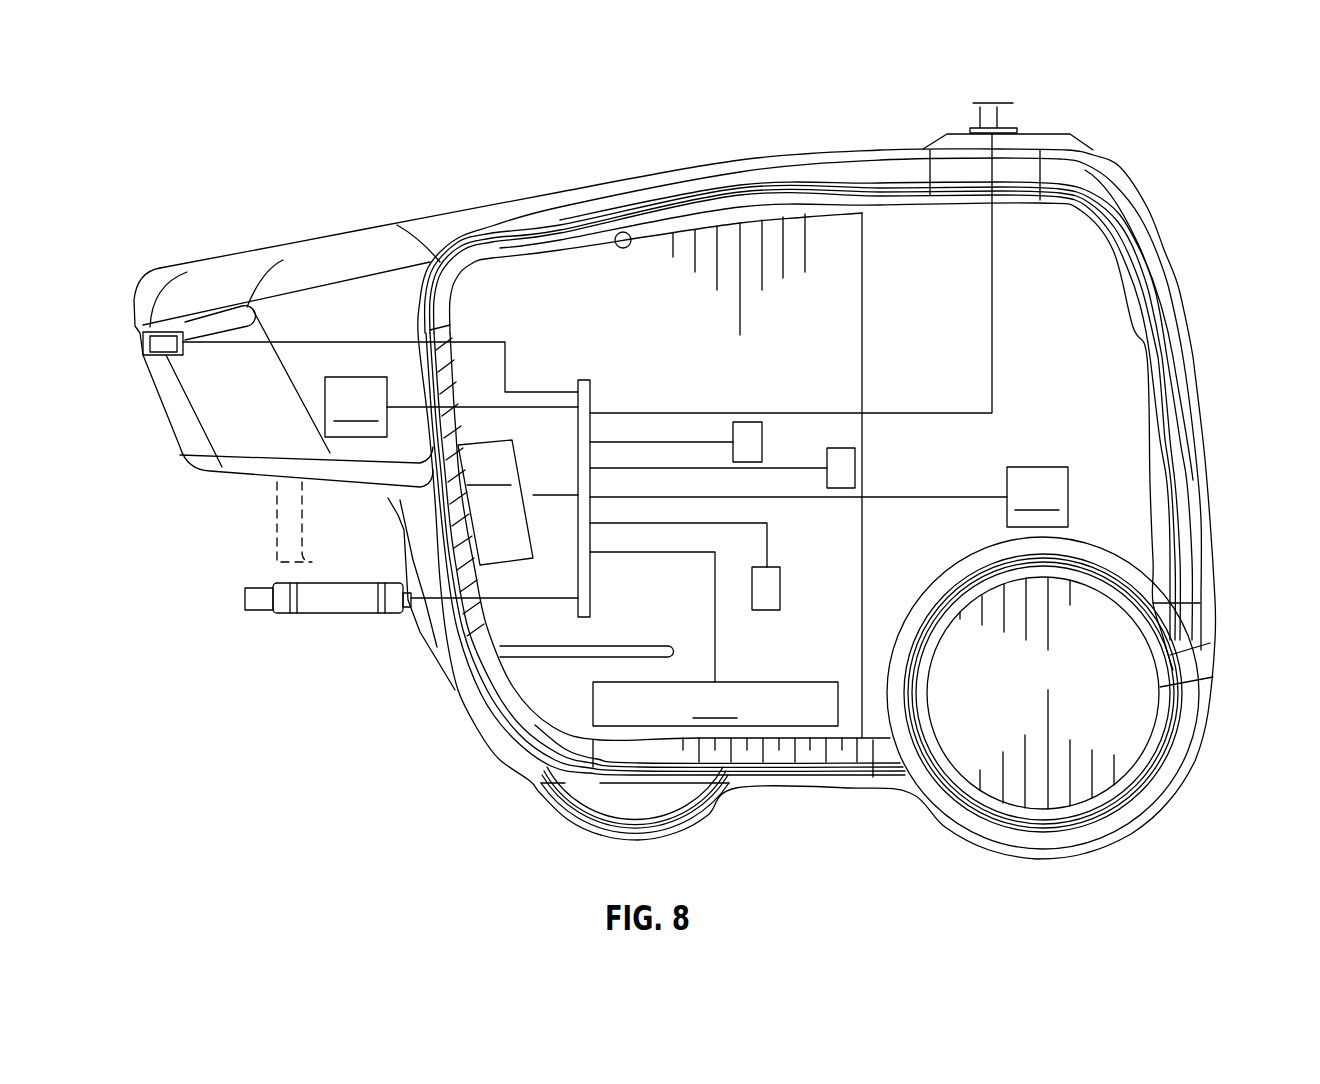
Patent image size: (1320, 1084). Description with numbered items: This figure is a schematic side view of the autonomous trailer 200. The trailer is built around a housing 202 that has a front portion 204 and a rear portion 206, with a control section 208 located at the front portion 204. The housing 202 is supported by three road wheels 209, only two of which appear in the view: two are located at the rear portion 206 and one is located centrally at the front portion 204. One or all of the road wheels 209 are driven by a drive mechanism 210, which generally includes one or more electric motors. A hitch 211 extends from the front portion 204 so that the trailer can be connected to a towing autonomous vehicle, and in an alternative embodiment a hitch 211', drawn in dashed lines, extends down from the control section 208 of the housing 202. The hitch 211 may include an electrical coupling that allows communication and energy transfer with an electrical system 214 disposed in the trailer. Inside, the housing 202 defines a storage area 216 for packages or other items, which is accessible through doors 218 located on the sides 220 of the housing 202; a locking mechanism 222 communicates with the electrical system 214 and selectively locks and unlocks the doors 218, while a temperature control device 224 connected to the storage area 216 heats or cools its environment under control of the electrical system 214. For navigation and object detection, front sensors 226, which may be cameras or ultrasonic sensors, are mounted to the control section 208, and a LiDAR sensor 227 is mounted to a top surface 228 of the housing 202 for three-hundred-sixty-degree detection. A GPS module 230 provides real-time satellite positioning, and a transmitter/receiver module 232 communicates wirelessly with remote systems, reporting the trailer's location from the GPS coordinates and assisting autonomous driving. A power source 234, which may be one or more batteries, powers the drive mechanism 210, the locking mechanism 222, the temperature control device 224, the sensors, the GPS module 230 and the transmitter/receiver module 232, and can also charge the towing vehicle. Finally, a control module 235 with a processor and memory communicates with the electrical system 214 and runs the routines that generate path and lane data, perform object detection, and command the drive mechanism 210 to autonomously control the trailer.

The autonomous trailer 200 is at (226, 101).
The housing 202 is at (1118, 194).
The front portion 204 is at (454, 703).
The rear portion 206 is at (1187, 331).
The control section 208 is at (218, 295).
The road wheels 209 is at (700, 807).
The drive mechanism 210 is at (829, 497).
The hitch 211 is at (411, 630).
The hitch 211' is at (245, 522).
The electrical system 214 is at (590, 380).
The storage area 216 is at (620, 232).
The doors 218 is at (862, 281).
The sides 220 is at (440, 262).
The locking mechanism 222 is at (857, 470).
The temperature control device 224 is at (518, 502).
The front sensors 226 is at (178, 360).
The LiDAR sensor 227 is at (990, 98).
The top surface 228 is at (512, 196).
The GPS module 230 is at (750, 421).
The transmitter/receiver module 232 is at (781, 590).
The power source 234 is at (669, 639).
The control module 235 is at (380, 389).